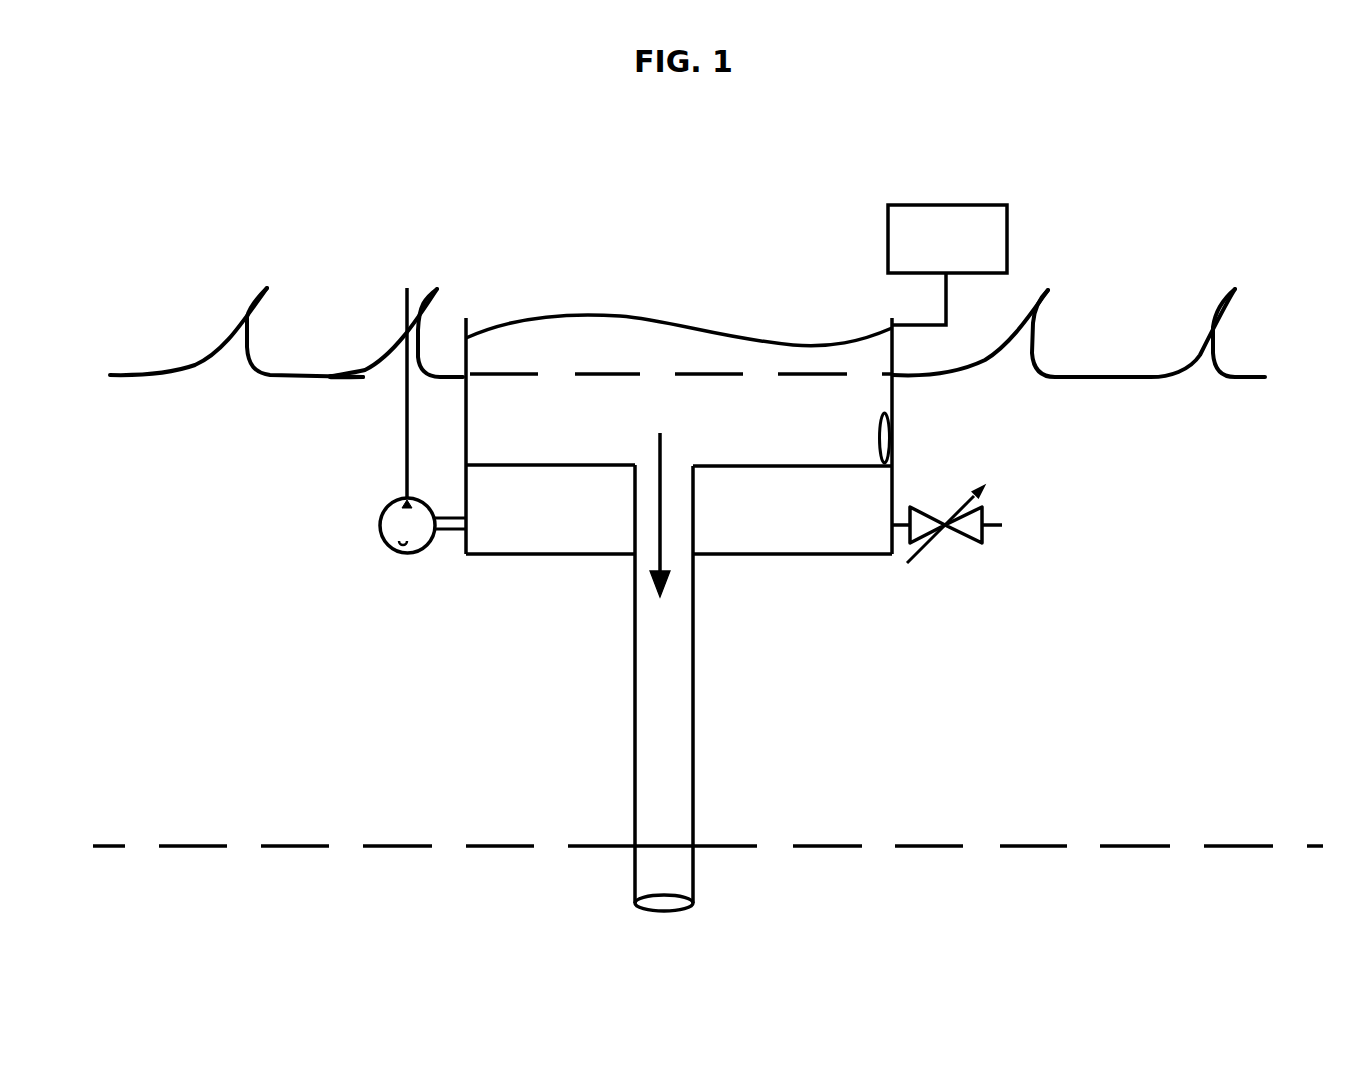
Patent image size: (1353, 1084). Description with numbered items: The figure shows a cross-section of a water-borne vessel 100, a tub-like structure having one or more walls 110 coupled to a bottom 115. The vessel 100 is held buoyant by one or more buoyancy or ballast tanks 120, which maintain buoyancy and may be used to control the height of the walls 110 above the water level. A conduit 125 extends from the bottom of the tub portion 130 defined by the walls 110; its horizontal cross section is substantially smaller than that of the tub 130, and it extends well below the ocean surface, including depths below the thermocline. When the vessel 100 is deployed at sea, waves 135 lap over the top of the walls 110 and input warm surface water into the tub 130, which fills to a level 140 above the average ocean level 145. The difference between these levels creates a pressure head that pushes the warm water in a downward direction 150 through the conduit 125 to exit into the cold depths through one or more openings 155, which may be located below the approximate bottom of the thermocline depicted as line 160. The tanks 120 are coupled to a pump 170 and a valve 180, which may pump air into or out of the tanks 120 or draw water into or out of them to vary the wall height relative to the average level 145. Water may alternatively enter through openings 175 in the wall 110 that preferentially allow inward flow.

The vessel 100 is at (399, 234).
The wall 110 is at (462, 358).
The bottom 115 is at (721, 468).
The buoyancy tank 120 is at (488, 542).
The conduit 125 is at (711, 714).
The tub portion 130 is at (679, 323).
The waves 135 is at (237, 305).
The level 140 is at (660, 322).
The average ocean level 145 is at (485, 373).
The downward direction 150 is at (664, 456).
The opening 155 is at (658, 912).
The line 160 is at (927, 846).
The pump 170 is at (404, 559).
The opening 175 is at (890, 421).
The valve 180 is at (997, 221).